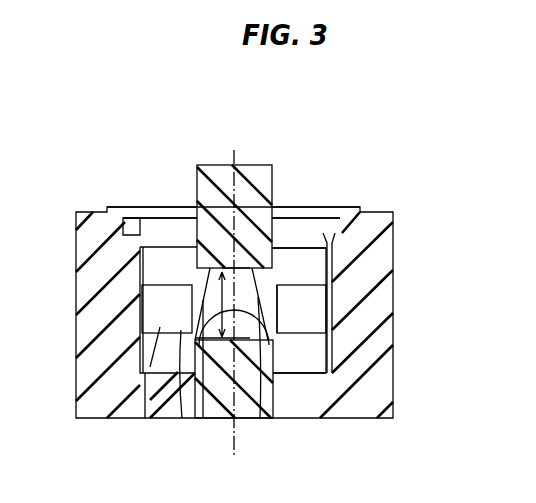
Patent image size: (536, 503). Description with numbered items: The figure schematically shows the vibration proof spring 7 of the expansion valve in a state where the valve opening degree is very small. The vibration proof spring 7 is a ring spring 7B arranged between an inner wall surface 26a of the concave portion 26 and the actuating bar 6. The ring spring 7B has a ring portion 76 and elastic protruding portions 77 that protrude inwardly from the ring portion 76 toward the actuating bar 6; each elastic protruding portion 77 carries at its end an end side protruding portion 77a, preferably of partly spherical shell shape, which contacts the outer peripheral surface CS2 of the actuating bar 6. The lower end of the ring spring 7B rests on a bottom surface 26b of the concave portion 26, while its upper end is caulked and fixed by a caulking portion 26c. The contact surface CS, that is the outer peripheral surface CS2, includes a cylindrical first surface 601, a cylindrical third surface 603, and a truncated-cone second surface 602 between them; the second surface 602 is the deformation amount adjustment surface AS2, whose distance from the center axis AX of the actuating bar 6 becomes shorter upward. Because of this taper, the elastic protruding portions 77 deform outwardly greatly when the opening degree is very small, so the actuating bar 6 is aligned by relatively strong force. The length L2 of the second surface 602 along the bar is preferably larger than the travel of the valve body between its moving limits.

The actuating bar 6 is at (268, 167).
The first surface 601 is at (273, 207).
The second surface 602 is at (232, 273).
The third surface 603 is at (283, 420).
The vibration proof spring 7 is at (310, 308).
The ring spring 7B is at (300, 312).
The concave portion 26 is at (370, 343).
The inner wall surface 26a is at (337, 360).
The bottom surface 26b is at (312, 418).
The caulking portion 26c is at (123, 214).
The ring portion 76 is at (140, 283).
The elastic protruding portion 77 is at (145, 420).
The end side protruding portion 77a is at (258, 420).
The center axis AX is at (234, 290).
The deformation amount adjustment surface AS2 is at (240, 283).
The contact surface CS is at (141, 268).
The outer peripheral surface CS2 is at (215, 292).
The length of the second surface L2 is at (197, 412).